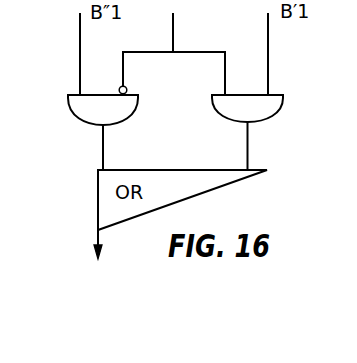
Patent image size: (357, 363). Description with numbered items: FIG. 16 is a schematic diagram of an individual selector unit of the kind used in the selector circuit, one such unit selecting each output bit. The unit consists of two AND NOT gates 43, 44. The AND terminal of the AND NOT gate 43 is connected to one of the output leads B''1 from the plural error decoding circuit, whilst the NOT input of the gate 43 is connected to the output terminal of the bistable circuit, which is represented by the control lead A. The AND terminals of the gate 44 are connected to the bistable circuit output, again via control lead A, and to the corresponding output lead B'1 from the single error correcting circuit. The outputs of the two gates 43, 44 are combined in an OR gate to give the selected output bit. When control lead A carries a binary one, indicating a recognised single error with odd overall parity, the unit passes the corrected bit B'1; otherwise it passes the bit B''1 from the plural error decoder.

The AND NOT gate 43 is at (82, 115).
The AND NOT gate 44 is at (262, 121).
The control lead A is at (172, 48).
The output signal D1 1 is at (101, 258).